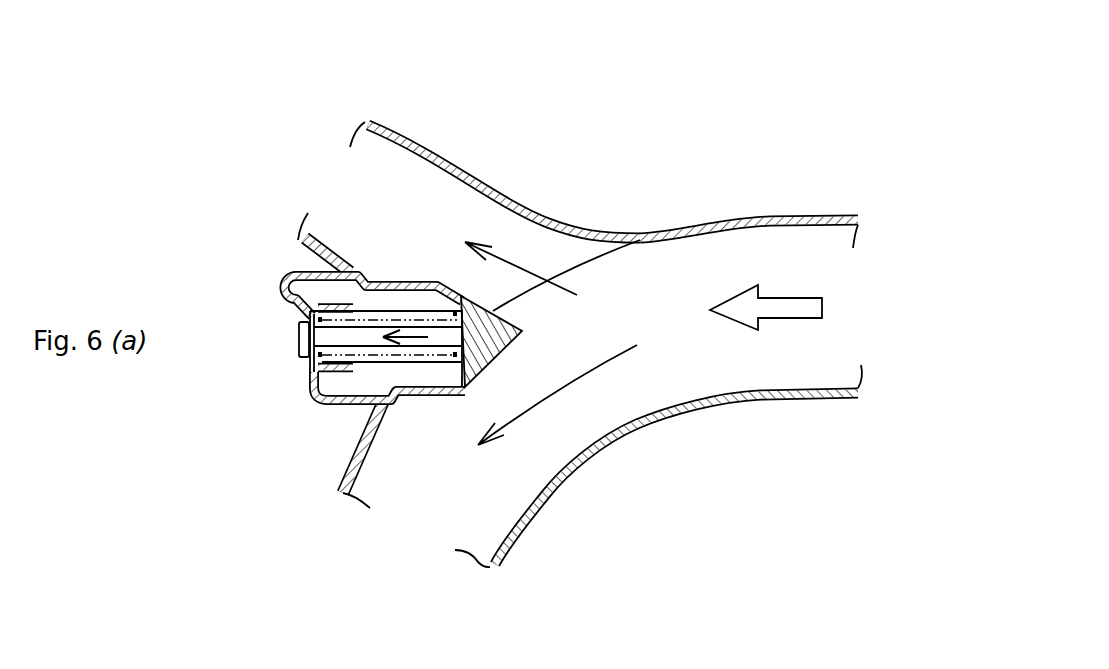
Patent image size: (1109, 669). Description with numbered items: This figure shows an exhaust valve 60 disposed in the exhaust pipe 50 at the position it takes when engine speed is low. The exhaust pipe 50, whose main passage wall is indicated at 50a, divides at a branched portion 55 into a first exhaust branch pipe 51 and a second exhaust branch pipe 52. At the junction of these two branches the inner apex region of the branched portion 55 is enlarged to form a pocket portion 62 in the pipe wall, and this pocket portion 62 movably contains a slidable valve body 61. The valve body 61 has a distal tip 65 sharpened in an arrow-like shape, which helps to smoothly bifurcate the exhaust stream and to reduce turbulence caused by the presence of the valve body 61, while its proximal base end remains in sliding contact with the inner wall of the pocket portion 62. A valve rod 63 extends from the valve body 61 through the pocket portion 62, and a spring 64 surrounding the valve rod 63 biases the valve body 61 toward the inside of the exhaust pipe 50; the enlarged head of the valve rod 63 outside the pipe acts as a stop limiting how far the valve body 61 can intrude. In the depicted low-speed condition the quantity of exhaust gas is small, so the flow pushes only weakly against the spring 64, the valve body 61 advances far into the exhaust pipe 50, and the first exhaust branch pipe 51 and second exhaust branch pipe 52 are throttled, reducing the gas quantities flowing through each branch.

The exhaust pipe 50 is at (613, 304).
The main passage wall 50a is at (820, 218).
The first exhaust branch pipe 51 is at (447, 162).
The second exhaust branch pipe 52 is at (518, 530).
The branched portion 55 is at (658, 469).
The exhaust valve 60 is at (393, 357).
The valve body 61 is at (483, 378).
The pocket portion 62 is at (287, 283).
The valve rod 63 is at (297, 337).
The spring 64 is at (397, 317).
The tip 65 is at (530, 329).